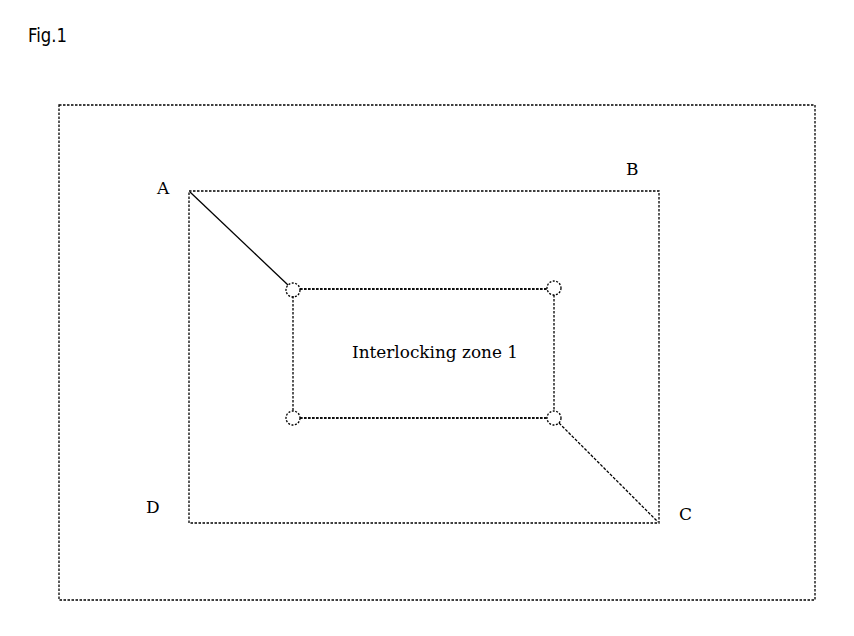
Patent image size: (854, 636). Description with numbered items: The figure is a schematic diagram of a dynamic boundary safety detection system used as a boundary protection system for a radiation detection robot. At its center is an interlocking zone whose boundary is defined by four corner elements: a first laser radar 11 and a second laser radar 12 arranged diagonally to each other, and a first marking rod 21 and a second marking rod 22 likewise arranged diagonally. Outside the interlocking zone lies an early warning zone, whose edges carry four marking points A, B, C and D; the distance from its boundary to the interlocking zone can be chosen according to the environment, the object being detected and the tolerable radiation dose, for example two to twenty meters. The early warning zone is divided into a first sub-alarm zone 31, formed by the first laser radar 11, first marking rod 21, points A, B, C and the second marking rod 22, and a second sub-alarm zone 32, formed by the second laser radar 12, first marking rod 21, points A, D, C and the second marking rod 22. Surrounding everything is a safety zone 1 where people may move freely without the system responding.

The safety zone 1 is at (437, 352).
The first sub-alarm zone 31 is at (423, 257).
The second sub-alarm zone 32 is at (393, 450).
The first laser radar 11 is at (571, 289).
The second laser radar 12 is at (276, 419).
The first marking rod 21 is at (277, 301).
The second marking rod 22 is at (545, 433).